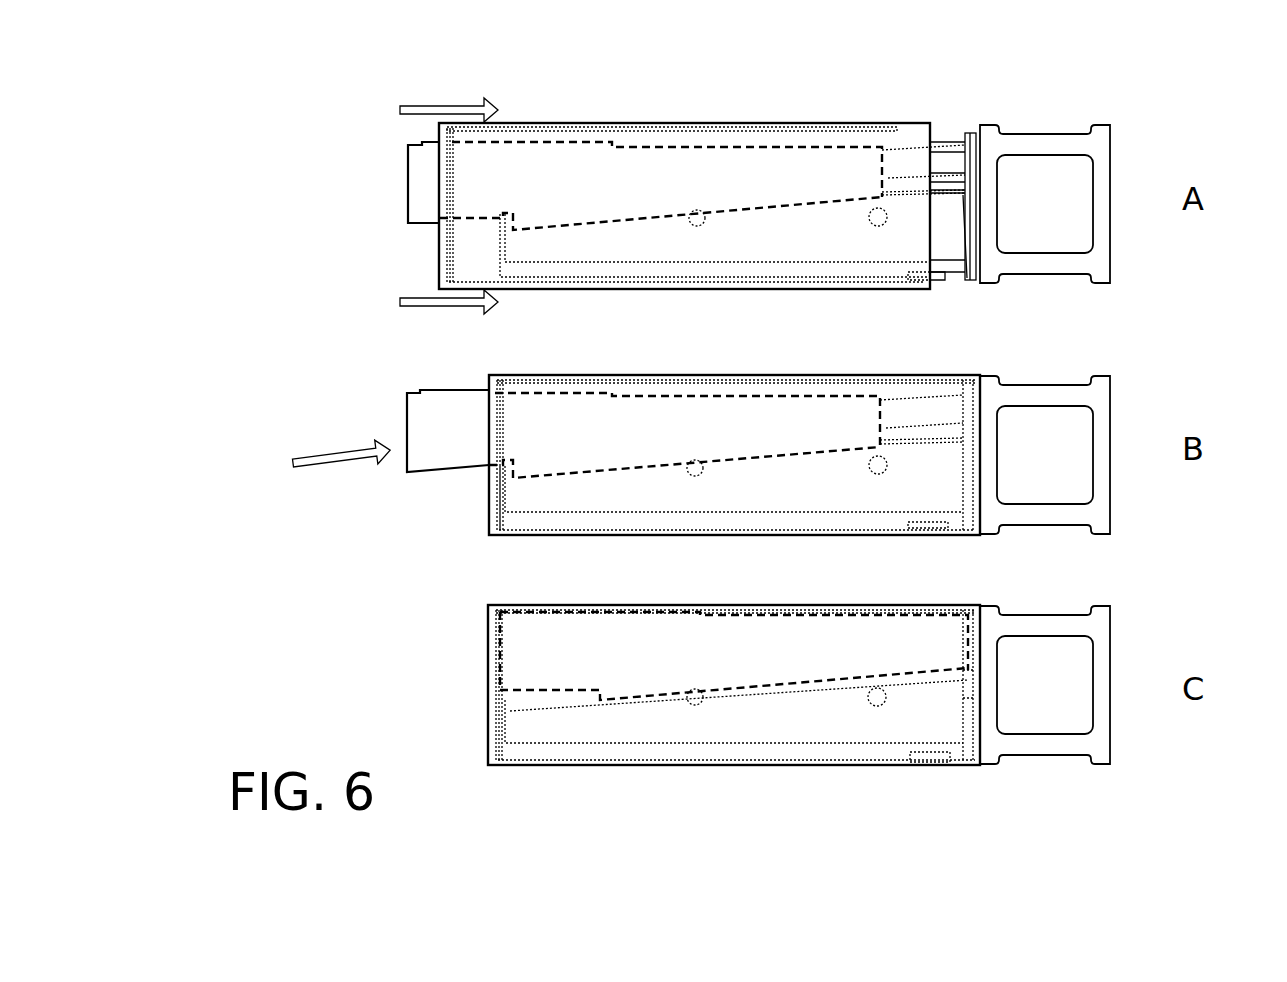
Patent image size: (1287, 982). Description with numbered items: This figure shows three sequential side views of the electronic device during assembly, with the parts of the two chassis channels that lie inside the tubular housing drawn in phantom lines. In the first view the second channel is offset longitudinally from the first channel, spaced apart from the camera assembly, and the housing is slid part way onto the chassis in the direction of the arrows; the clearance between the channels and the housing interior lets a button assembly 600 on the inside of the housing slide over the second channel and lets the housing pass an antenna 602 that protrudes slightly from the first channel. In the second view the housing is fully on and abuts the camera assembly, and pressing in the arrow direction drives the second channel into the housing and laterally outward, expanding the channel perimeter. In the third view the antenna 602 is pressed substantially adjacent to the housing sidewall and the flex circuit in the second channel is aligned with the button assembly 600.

The button assembly 600 is at (762, 132).
The antenna 602 is at (940, 281).